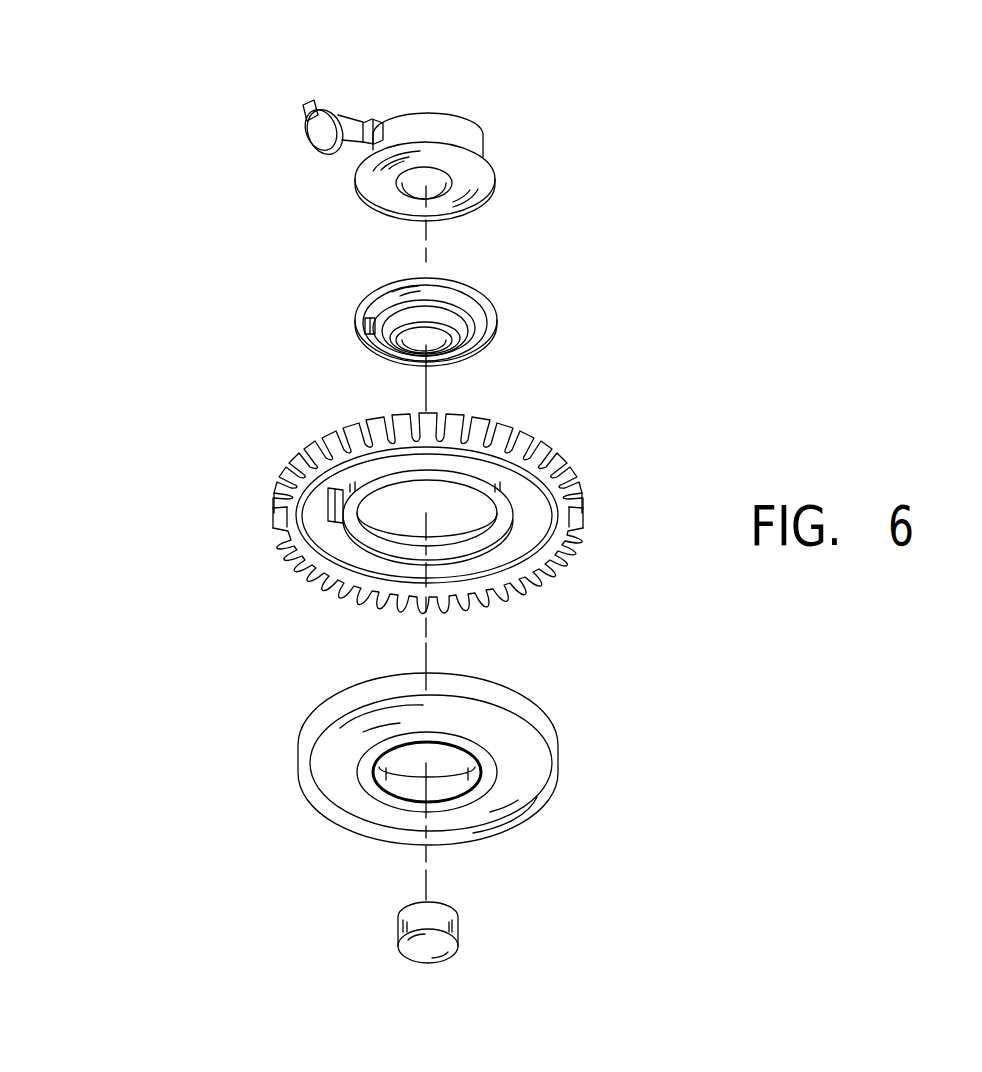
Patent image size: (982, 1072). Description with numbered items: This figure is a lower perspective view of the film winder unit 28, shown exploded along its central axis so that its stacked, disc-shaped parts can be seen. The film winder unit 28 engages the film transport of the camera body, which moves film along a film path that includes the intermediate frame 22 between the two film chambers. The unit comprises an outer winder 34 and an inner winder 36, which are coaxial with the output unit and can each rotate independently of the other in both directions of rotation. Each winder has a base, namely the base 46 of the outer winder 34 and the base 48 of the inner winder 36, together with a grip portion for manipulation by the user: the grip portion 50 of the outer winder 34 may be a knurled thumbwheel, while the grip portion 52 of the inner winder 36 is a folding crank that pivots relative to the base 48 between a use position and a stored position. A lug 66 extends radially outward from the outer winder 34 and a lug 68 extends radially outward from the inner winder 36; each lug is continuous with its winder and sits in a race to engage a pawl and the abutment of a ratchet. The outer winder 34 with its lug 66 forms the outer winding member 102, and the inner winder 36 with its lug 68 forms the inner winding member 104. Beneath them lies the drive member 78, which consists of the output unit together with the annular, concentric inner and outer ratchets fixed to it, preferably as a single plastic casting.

The intermediate frame 22 is at (460, 934).
The film winder unit 28 is at (658, 20).
The outer winder 34 is at (403, 538).
The inner winder 36 is at (486, 225).
The base 46 is at (325, 567).
The base 48 is at (362, 188).
The grip portion 50 is at (499, 594).
The grip portion 52 is at (333, 102).
The lug 66 is at (328, 520).
The lug 68 is at (377, 336).
The drive member 78 is at (558, 756).
The outer winding member 102 is at (403, 538).
The inner winding member 104 is at (500, 93).